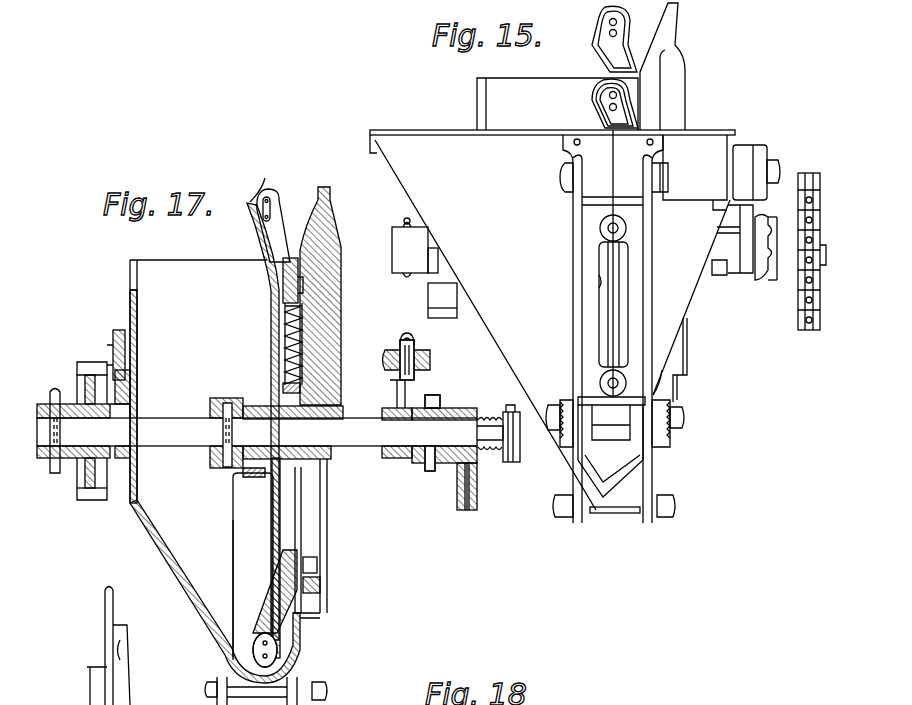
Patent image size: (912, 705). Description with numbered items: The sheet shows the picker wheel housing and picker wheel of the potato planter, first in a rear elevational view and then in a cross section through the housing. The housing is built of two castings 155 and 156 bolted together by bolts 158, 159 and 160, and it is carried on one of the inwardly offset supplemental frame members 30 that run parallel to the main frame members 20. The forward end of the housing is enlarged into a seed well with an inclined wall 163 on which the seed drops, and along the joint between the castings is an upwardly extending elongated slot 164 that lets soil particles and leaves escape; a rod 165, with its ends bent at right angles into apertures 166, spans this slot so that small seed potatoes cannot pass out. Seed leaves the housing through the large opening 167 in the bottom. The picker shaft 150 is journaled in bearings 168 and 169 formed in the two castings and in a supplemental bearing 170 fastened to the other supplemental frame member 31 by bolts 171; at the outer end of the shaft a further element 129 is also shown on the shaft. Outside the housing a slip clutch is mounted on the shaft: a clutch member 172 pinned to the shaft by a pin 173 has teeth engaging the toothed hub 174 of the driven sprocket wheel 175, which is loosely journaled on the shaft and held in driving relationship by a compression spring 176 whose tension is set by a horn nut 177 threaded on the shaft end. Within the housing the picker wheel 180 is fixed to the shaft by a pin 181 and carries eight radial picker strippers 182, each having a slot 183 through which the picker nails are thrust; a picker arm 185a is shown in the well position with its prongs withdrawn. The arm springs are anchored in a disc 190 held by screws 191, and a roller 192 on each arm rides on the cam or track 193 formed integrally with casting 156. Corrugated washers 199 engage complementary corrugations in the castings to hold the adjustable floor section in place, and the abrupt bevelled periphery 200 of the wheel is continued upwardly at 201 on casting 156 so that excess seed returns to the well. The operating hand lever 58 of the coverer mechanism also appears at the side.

In FIG. 15, the main frame member 20 is at (762, 155).
In FIG. 17, the supplemental frame member 30 is at (113, 335).
In FIG. 17, the supplemental frame member 31 is at (416, 335).
In FIG. 17, the operating hand lever 58 is at (105, 606).
In FIG. 17, the hub flange 129 is at (85, 362).
In FIG. 15, the picker shaft 150 is at (392, 245).
In FIG. 17, the picker shaft 150 is at (165, 420).
In FIG. 15, the housing casting 155 is at (490, 326).
In FIG. 17, the housing casting 155 is at (140, 518).
In FIG. 15, the housing casting 156 is at (712, 150).
In FIG. 17, the housing casting 156 is at (327, 570).
In FIG. 15, the bolt 158 is at (555, 507).
In FIG. 17, the bolt 158 is at (207, 690).
In FIG. 15, the bolt 159 is at (615, 412).
In FIG. 15, the bolt 160 is at (565, 178).
In FIG. 15, the inclined wall 163 is at (475, 245).
In FIG. 15, the elongated slot 164 is at (599, 283).
In FIG. 15, the rod 165 is at (608, 260).
In FIG. 15, the aperture 166 is at (598, 236).
In FIG. 17, the opening 167 is at (232, 578).
In FIG. 17, the bearing 168 is at (128, 390).
In FIG. 17, the bearing 169 is at (340, 455).
In FIG. 15, the supplemental bearing 170 is at (727, 232).
In FIG. 17, the supplemental bearing 170 is at (392, 410).
In FIG. 15, the bolt 171 is at (778, 172).
In FIG. 17, the bolt 171 is at (392, 360).
In FIG. 17, the clutch member 172 is at (440, 388).
In FIG. 17, the pin 173 is at (430, 470).
In FIG. 15, the hub 174 is at (778, 232).
In FIG. 17, the hub 174 is at (455, 490).
In FIG. 15, the driven sprocket wheel 175 is at (800, 312).
In FIG. 17, the driven sprocket wheel 175 is at (467, 511).
In FIG. 17, the compression spring 176 is at (486, 455).
In FIG. 17, the horn nut 177 is at (512, 408).
In FIG. 17, the picker wheel 180 is at (274, 340).
In FIG. 17, the pin 181 is at (228, 468).
In FIG. 15, the picker stripper 182 is at (605, 16).
In FIG. 17, the picker stripper 182 is at (280, 206).
In FIG. 17, the slot 183 is at (267, 181).
In FIG. 17, the picker arm 185a is at (272, 628).
In FIG. 17, the disc 190 is at (280, 498).
In FIG. 17, the screw 191 is at (273, 400).
In FIG. 17, the roller 192 is at (317, 560).
In FIG. 17, the cam or track 193 is at (320, 590).
In FIG. 15, the corrugated washer 199 is at (585, 405).
In FIG. 17, the bevelled periphery 200 is at (300, 268).
In FIG. 15, the bevelled continuation 201 is at (672, 30).
In FIG. 17, the bevelled continuation 201 is at (330, 220).